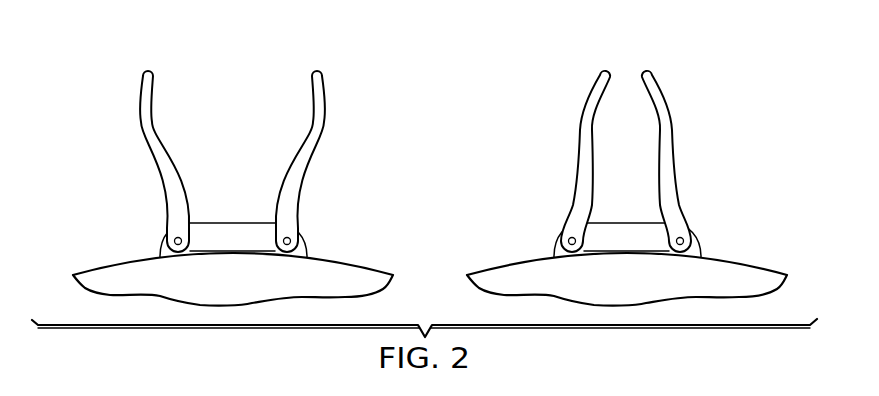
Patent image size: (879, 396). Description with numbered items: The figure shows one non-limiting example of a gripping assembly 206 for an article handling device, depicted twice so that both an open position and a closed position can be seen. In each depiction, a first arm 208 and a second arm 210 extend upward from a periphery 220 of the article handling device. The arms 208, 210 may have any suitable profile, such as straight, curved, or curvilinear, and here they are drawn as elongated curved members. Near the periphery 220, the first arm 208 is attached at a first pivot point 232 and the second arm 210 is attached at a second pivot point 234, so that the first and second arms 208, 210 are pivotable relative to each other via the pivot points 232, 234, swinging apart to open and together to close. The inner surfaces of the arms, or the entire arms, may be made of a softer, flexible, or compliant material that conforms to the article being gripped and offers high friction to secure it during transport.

The gripping assembly 206 is at (430, 154).
The first arm 208 is at (139, 113).
The second arm 210 is at (327, 112).
The periphery 220 is at (250, 288).
The first pivot point 232 is at (168, 242).
The second pivot point 234 is at (298, 242).